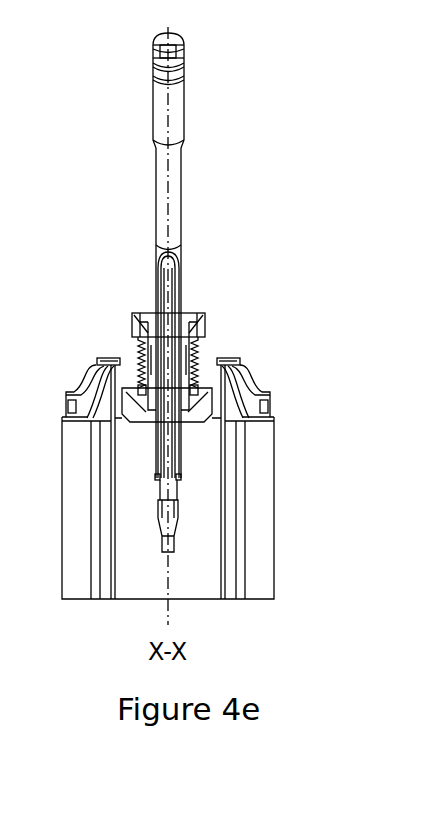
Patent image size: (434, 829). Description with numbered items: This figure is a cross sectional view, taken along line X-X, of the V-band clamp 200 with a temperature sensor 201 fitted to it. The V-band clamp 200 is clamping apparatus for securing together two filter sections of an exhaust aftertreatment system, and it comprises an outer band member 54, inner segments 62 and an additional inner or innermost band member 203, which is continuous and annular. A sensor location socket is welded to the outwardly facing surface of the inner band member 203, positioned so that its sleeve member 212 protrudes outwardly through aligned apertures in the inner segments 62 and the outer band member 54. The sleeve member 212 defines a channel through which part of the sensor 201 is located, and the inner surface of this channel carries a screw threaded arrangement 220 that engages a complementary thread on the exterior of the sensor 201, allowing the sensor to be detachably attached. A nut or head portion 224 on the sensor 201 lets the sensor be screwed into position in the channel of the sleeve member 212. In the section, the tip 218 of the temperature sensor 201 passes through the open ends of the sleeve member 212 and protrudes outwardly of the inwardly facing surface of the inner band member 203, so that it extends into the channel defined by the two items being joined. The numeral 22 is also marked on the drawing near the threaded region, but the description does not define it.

The sensor 201 is at (206, 100).
The V-band clamp 200 is at (301, 268).
The threaded portion 22 is at (136, 349).
The screw threaded arrangement 220 is at (136, 367).
The nut or head portion 224 is at (205, 316).
The sleeve member 212 is at (200, 366).
The outer band member 54 is at (233, 358).
The inner segments 62 is at (253, 389).
The inner band member 203 is at (281, 455).
The tip 218 is at (182, 558).